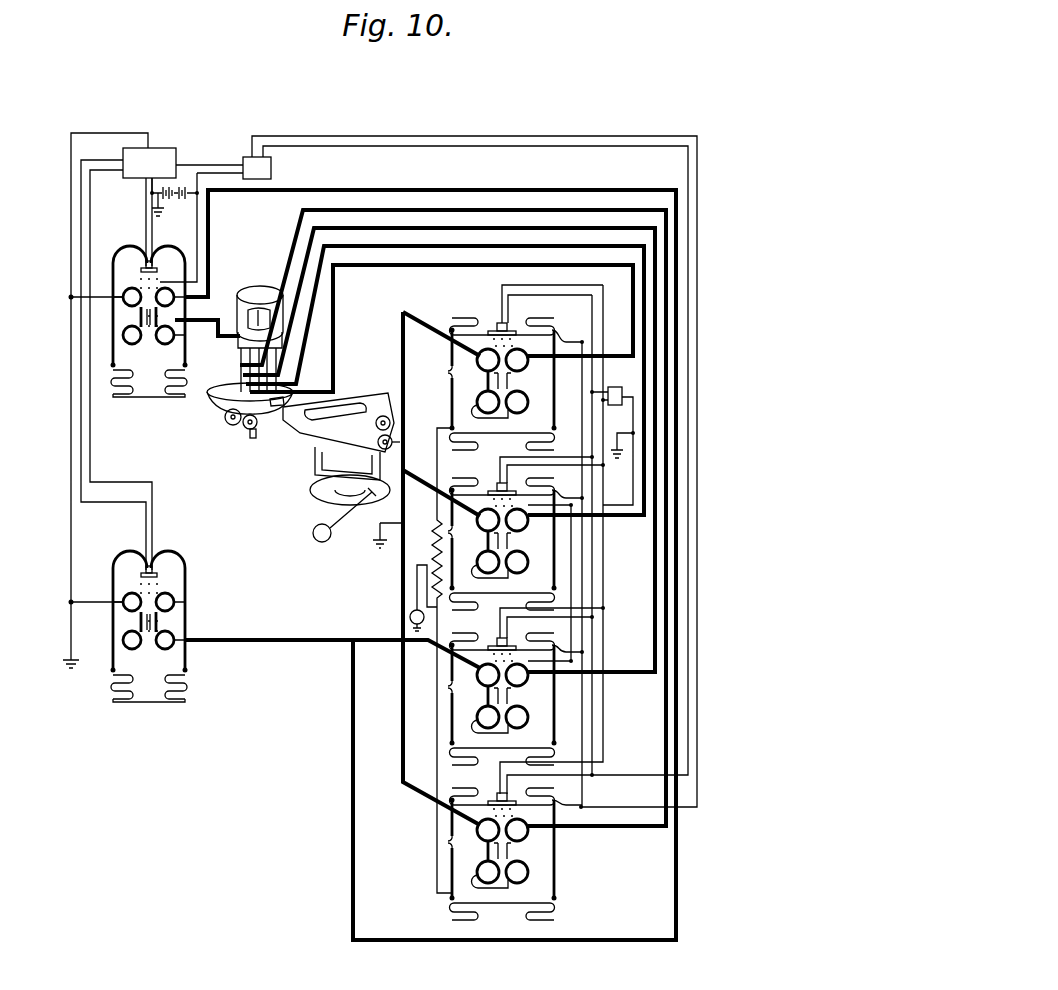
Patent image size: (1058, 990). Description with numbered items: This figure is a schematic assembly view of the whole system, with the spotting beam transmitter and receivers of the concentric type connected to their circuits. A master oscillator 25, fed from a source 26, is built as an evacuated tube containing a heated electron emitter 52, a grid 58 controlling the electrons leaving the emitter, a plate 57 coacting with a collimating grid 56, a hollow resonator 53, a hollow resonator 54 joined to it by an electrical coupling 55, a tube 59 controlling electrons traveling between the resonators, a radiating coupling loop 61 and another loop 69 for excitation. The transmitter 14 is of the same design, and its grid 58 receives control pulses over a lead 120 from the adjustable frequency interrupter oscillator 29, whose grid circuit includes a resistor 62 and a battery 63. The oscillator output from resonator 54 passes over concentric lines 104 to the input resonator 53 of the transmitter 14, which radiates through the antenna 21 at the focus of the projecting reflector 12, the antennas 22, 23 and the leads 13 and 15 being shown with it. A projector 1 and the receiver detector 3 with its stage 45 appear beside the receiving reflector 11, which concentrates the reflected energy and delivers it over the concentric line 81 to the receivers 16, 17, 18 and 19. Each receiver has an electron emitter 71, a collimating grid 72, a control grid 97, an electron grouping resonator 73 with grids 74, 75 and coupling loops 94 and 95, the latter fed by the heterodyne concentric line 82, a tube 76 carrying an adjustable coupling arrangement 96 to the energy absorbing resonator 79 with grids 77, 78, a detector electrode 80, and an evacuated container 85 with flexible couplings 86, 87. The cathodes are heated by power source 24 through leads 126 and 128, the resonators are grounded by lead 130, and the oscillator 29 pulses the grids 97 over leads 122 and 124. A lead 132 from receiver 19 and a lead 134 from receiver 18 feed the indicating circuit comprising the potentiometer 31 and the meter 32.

The source 26 is at (152, 148).
The resistor 62 is at (170, 187).
The battery 63 is at (186, 188).
The lead 120 is at (197, 226).
The adjustable frequency interrupter oscillator 29 is at (271, 167).
The lead 122 is at (383, 137).
The lead 124 is at (474, 147).
The transmitter 14 is at (112, 335).
The plate 57 is at (141, 266).
The grid 58 is at (122, 270).
The heated electron emitter 52 is at (154, 266).
The collimating grid 56 is at (160, 292).
The loop 69 is at (178, 290).
The electrical coupling 55 is at (127, 300).
The hollow resonator 53 is at (176, 300).
The tube 59 is at (176, 321).
The radiating coupling loop 61 is at (160, 333).
The hollow resonator 54 is at (178, 340).
The master oscillator 25 is at (113, 612).
The concentric lines 104 is at (387, 648).
The antenna 21 is at (262, 285).
The element 15 is at (248, 320).
The projecting reflector 12 is at (240, 350).
The antenna 23 is at (245, 365).
The leads 13 is at (246, 376).
The receiving reflector 11 is at (213, 407).
The antenna 22 is at (255, 438).
The receiver detector 3 is at (335, 467).
The projector 1 is at (350, 393).
The stage top 45 is at (388, 393).
The concentric line 82 is at (413, 318).
The concentric line 81 is at (604, 345).
The receiver 18 is at (558, 402).
The electron emitter 71 is at (507, 324).
The flexible coupling 87 is at (512, 320).
The evacuated container 85 is at (560, 338).
The collimating grid 72 is at (514, 348).
The grid 97 is at (493, 334).
The electron grouping resonator 73 is at (486, 360).
The coupling loop 95 is at (452, 364).
The coupling loop 94 is at (528, 362).
The grid 75 is at (517, 372).
The tube 76 is at (508, 385).
The grid 77 is at (522, 392).
The grid 74 is at (485, 364).
The adjustable coupling arrangement 96 is at (486, 388).
The grid 78 is at (480, 408).
The energy absorbing resonator 79 is at (520, 402).
The flexible coupling 86 is at (470, 428).
The detector electrode 80 is at (508, 420).
The power source 24 is at (616, 387).
The lead 134 is at (437, 420).
The lead 132 is at (437, 893).
The potentiometer 31 is at (437, 553).
The indicating apparatus 32 is at (410, 615).
The lead 130 is at (644, 490).
The receiver 17 is at (557, 530).
The lead 128 is at (604, 563).
The lead 126 is at (593, 585).
The receiver 16 is at (557, 692).
The receiver 19 is at (560, 847).